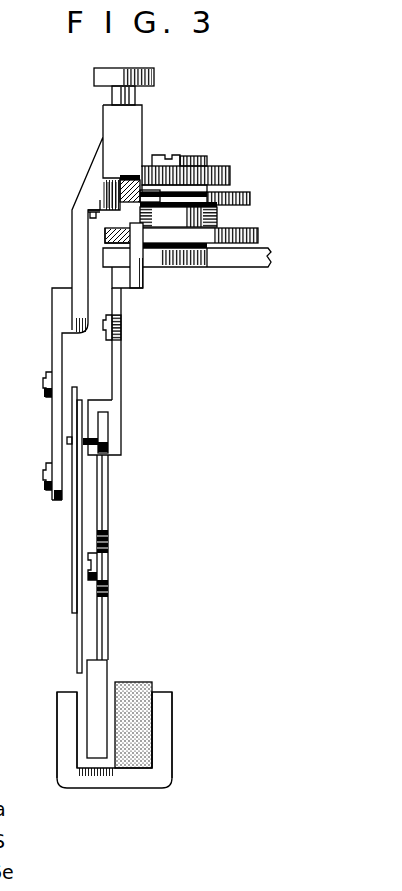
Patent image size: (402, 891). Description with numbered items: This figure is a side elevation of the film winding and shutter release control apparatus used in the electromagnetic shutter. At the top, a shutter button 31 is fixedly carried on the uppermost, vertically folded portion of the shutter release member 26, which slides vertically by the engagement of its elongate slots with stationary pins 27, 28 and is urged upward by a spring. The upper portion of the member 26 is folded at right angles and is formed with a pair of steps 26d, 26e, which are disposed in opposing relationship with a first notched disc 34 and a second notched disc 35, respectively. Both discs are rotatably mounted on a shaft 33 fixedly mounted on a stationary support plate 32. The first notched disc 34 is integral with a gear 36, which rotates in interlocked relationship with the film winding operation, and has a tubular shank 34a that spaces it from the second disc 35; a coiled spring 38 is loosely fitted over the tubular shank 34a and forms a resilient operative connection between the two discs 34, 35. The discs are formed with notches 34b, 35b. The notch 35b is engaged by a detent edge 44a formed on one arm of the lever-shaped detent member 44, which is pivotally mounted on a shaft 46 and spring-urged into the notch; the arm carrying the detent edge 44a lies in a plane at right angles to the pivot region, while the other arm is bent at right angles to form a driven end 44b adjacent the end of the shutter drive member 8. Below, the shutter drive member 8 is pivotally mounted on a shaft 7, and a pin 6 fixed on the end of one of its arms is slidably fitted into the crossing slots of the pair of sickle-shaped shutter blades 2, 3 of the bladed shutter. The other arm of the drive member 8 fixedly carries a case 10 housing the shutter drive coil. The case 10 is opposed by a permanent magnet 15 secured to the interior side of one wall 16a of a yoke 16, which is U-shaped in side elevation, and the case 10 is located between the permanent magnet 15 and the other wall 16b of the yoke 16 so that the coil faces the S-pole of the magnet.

The shutter blade 2 is at (70, 568).
The shutter blade 3 is at (75, 628).
The pin 6 is at (95, 450).
The shaft 7 is at (97, 562).
The shutter drive member 8 is at (108, 516).
The case 10 is at (100, 684).
The permanent magnet 15 is at (142, 712).
The yoke 16 is at (134, 782).
The wall of yoke 16a is at (163, 738).
The other wall of yoke 16b is at (62, 729).
The shutter release member 26 is at (62, 306).
The step 26d is at (122, 190).
The step 26e is at (90, 216).
The stationary pin 27 is at (43, 380).
The stationary pin 28 is at (43, 484).
The shutter button 31 is at (117, 77).
The stationary support plate 32 is at (258, 262).
The shaft 33 is at (170, 158).
The first notched disc 34 is at (238, 187).
The tubular shank 34a is at (178, 217).
The notch 34b is at (125, 194).
The second notched disc 35 is at (258, 238).
The notch 35b is at (110, 245).
The gear 36 is at (208, 164).
The coiled spring 38 is at (208, 218).
The detent member 44 is at (118, 377).
The detent edge 44a is at (140, 246).
The driven end 44b is at (114, 428).
The shaft 46 is at (105, 341).